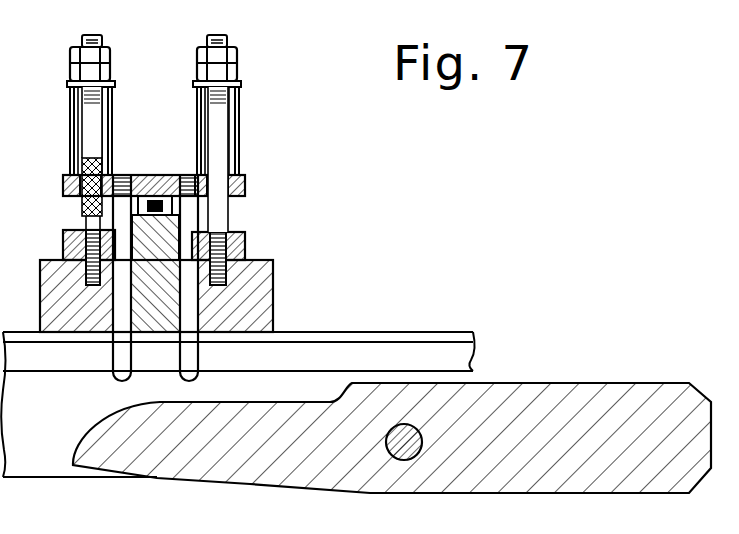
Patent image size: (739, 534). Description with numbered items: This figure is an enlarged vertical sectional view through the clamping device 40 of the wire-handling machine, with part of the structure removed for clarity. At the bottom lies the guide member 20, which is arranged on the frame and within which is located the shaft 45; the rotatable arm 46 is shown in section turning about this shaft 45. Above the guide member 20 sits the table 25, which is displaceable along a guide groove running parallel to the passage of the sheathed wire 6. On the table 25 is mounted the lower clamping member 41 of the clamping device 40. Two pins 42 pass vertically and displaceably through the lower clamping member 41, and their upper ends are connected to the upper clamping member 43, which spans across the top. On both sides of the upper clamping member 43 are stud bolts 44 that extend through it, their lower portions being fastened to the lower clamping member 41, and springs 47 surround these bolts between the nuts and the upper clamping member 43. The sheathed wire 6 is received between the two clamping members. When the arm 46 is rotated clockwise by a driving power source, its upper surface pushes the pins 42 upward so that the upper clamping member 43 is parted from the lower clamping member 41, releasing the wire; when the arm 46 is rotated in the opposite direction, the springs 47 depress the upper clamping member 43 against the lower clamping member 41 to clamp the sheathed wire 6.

The sheathed wire 6 is at (158, 176).
The guide member 20 is at (48, 467).
The table 25 is at (273, 282).
The clamping device 40 is at (252, 196).
The lower clamping member 41 is at (65, 242).
The pin 42 is at (131, 356).
The upper clamping member 43 is at (63, 185).
The stud bolt 44 is at (82, 37).
The shaft 45 is at (404, 424).
The rotatable arm 46 is at (121, 462).
The spring 47 is at (72, 128).